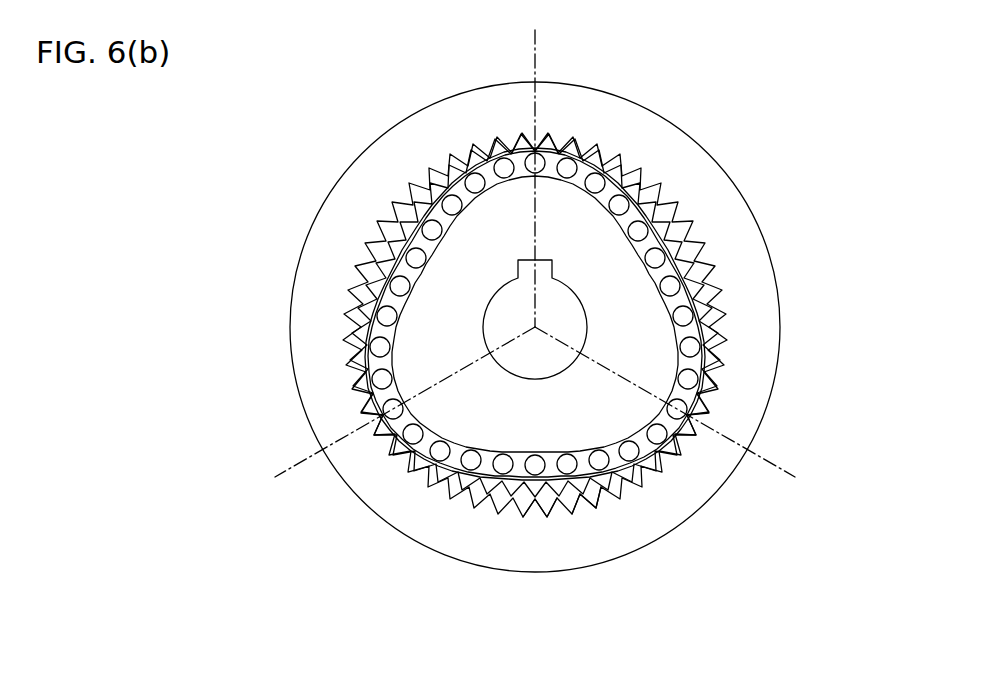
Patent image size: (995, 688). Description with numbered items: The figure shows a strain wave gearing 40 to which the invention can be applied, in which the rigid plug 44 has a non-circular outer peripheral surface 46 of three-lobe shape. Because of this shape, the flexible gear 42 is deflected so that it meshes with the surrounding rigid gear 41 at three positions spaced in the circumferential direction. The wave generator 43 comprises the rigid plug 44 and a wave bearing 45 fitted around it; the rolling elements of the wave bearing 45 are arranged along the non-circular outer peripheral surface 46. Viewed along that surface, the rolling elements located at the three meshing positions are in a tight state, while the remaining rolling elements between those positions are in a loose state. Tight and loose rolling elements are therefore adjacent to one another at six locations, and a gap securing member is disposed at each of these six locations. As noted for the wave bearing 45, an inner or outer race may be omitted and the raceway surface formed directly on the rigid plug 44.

The strain wave gearing 40 is at (657, 99).
The rigid gear 41 is at (729, 238).
The flexible gear 42 is at (695, 275).
The wave generator 43 is at (627, 328).
The rigid plug 44 is at (453, 267).
The wave bearing 45 is at (545, 497).
The non-circular outer peripheral surface 46 is at (590, 492).